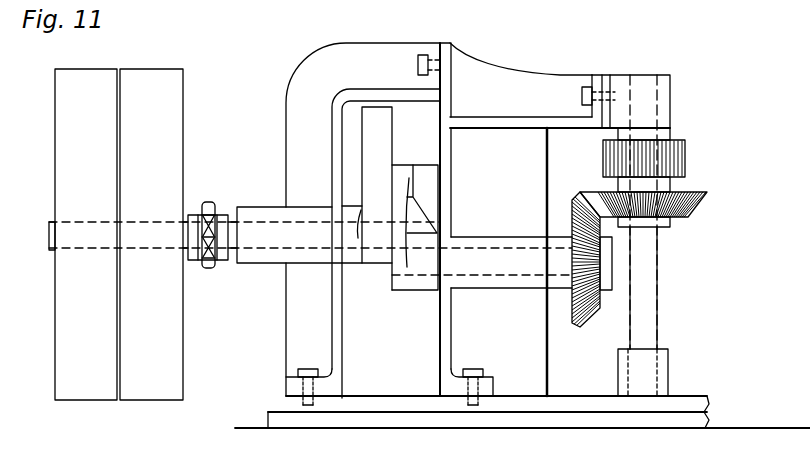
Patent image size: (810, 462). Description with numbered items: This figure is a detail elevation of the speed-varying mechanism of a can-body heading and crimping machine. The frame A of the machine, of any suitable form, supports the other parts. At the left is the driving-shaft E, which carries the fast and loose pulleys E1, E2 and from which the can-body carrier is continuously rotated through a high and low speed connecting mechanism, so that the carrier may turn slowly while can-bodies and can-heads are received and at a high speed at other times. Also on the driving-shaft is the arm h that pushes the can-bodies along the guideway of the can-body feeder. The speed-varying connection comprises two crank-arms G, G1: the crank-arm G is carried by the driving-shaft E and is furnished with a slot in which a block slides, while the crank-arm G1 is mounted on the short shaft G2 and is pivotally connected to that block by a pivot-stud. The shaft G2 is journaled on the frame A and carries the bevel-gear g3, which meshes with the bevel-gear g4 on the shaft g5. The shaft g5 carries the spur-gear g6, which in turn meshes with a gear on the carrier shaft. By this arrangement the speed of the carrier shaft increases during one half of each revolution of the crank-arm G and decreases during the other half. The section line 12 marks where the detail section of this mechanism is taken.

The frame A is at (522, 235).
The driving-shaft E is at (47, 244).
The fast pulley E1 is at (86, 234).
The loose pulley E2 is at (151, 234).
The arm of can-body feeder h is at (207, 270).
The crank-arm G is at (374, 198).
The crank-arm G1 is at (398, 213).
The shaft G2 is at (390, 290).
The bevel-gear g3 is at (584, 318).
The bevel-gear g4 is at (693, 207).
The shaft g5 is at (650, 278).
The spur-gear g6 is at (688, 158).
The section line 12 is at (435, 292).